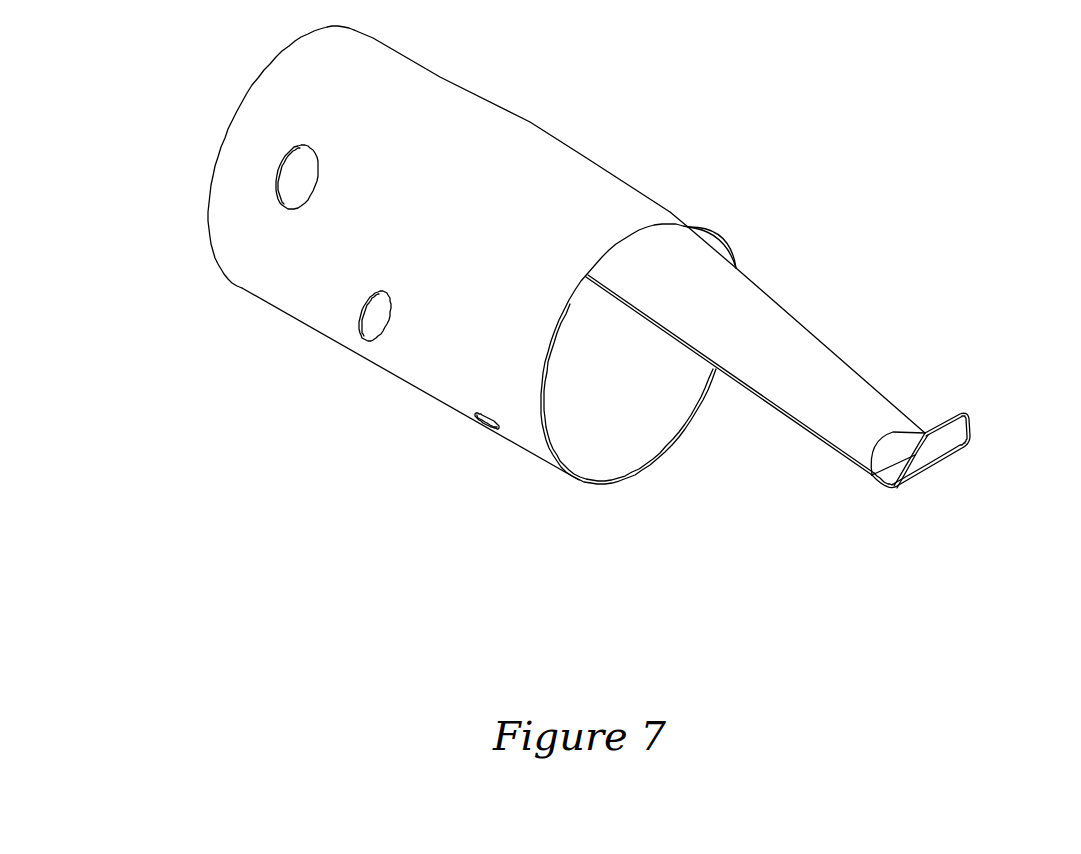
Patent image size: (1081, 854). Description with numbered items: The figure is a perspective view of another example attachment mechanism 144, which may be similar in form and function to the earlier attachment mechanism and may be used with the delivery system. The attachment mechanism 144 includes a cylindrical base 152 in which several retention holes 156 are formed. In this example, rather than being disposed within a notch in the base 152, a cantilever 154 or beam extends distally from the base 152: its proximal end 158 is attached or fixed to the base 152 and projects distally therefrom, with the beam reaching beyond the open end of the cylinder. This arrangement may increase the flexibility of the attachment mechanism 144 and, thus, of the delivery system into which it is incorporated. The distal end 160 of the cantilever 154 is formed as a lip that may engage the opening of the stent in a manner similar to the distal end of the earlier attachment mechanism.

The attachment mechanism 144 is at (866, 114).
The cylindrical base 152 is at (507, 143).
The cantilever 154 is at (797, 358).
The retention holes 156 is at (295, 178).
The proximal end 158 is at (642, 247).
The distal end 160 is at (957, 432).